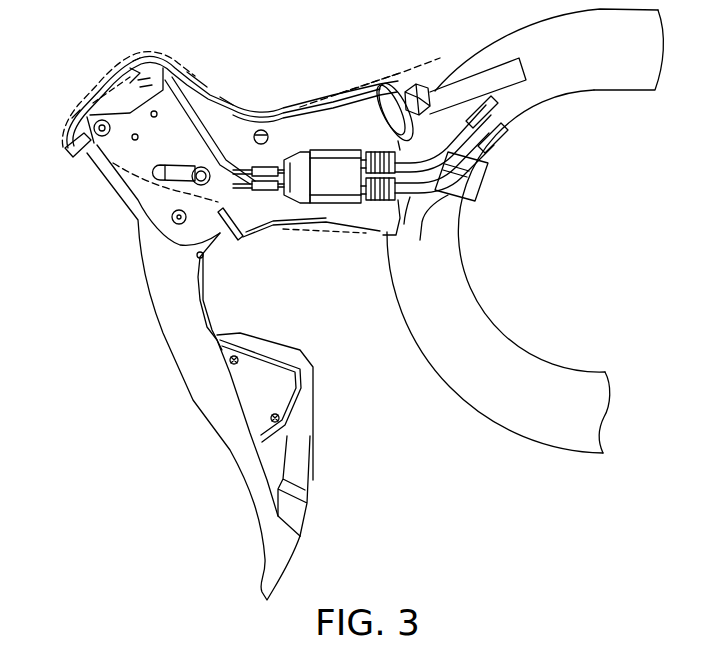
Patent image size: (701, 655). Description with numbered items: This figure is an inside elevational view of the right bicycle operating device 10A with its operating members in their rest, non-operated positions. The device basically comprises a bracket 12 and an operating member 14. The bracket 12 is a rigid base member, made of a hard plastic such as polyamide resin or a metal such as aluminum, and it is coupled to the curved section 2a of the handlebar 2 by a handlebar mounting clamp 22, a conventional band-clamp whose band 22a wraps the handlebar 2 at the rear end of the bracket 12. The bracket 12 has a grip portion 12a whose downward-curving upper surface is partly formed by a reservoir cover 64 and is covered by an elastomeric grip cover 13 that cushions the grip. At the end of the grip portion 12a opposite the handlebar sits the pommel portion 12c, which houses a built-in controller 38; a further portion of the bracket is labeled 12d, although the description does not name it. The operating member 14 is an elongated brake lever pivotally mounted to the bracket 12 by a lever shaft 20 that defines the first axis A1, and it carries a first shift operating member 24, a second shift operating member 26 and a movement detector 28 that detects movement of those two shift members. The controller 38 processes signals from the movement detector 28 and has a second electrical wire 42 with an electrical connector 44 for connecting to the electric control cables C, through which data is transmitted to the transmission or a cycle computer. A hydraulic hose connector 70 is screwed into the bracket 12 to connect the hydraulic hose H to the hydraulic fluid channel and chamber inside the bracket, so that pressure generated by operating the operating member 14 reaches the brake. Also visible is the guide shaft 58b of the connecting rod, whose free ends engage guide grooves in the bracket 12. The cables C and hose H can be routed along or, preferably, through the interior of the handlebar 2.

The handlebar 2 is at (598, 100).
The curved section 2a is at (467, 234).
The bicycle operating device 10A is at (94, 66).
The bracket 12 is at (266, 104).
The grip portion 12a is at (320, 133).
The pommel portion 12c is at (143, 57).
The lock member 12d is at (161, 165).
The grip cover 13 is at (369, 76).
The operating member 14 is at (148, 317).
The lever shaft 20 is at (177, 226).
The handlebar mounting clamp 22 is at (490, 202).
The band 22a is at (432, 222).
The first shift operating member 24 is at (277, 468).
The second shift operating member 26 is at (298, 443).
The movement detector 28 is at (258, 386).
The controller 38 is at (90, 97).
The second electrical wire 42 is at (200, 90).
The electrical connector 44 is at (334, 197).
The guide shaft 58b is at (213, 193).
The reservoir cover 64 is at (233, 102).
The hydraulic hose connector 70 is at (416, 90).
The first axis A1 is at (171, 217).
The electric control cables C is at (480, 138).
The hydraulic hose H is at (493, 43).